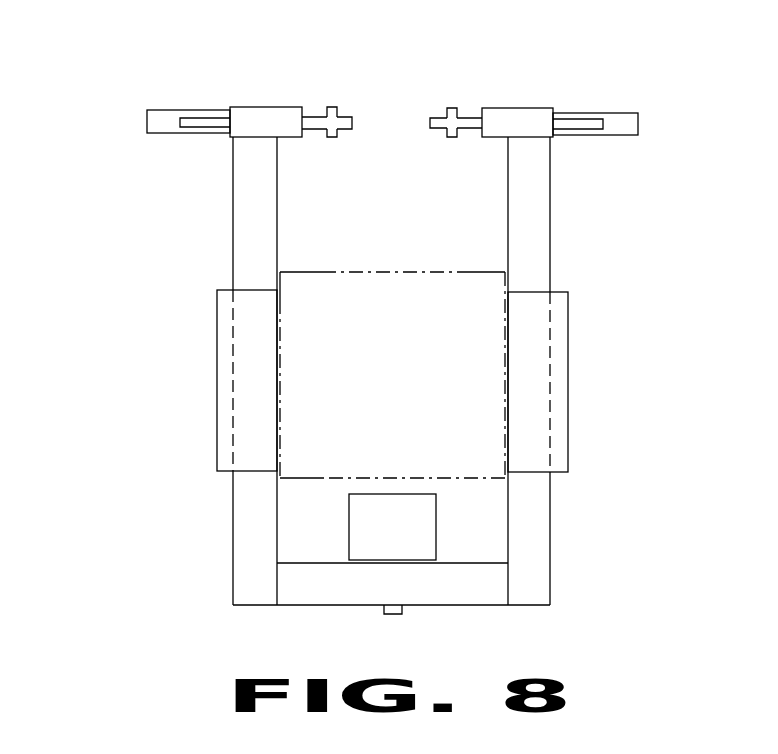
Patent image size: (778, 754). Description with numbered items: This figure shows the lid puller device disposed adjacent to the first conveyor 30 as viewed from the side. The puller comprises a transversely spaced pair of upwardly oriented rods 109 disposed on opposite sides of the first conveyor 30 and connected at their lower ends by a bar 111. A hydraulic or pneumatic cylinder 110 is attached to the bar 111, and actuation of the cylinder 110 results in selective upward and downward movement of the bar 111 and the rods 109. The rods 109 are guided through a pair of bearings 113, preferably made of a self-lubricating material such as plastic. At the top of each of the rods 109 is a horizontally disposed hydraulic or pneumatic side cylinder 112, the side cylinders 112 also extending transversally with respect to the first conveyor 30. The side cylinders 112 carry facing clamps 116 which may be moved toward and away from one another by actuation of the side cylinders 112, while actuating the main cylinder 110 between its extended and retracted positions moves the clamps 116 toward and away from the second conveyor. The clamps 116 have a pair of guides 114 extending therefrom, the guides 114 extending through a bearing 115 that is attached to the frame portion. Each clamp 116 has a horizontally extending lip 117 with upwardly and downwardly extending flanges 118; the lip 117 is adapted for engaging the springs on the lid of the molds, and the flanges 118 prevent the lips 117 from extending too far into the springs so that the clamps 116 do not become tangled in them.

The first conveyor 30 is at (472, 271).
The rods 109 is at (233, 236).
The cylinder 110 is at (357, 533).
The bar 111 is at (484, 590).
The side cylinder 112 is at (147, 126).
The bearings 113 is at (247, 370).
The guides 114 is at (195, 132).
The bearing 115 is at (262, 107).
The clamps 116 is at (315, 110).
The lip 117 is at (352, 122).
The flanges 118 is at (332, 107).